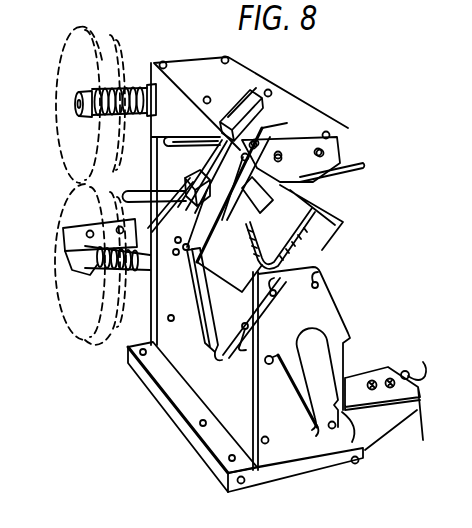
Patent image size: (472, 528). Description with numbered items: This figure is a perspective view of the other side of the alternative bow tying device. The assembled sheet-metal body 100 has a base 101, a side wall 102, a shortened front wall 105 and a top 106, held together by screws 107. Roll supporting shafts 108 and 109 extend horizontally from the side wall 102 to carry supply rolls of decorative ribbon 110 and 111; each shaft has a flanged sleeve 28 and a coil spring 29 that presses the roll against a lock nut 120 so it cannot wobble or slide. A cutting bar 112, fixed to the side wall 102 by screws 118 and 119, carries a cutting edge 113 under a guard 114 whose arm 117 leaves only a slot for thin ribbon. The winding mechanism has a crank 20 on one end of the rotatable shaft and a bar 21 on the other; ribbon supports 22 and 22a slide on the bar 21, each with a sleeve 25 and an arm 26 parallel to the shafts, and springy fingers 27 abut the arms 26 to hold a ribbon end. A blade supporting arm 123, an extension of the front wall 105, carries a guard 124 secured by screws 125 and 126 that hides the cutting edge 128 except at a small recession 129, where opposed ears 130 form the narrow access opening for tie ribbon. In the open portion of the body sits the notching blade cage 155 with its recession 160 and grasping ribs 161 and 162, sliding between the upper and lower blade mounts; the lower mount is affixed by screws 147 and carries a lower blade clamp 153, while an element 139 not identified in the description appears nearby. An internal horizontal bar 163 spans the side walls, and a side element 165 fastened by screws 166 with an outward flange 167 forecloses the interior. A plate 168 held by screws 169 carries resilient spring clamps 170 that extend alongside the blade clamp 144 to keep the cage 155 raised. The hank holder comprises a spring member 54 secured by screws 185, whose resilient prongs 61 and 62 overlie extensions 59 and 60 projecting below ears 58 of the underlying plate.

The crank 20 is at (366, 165).
The bar 21 is at (212, 162).
The ribbon support 22 is at (220, 124).
The ribbon support 22a is at (186, 182).
The sleeve 25 is at (258, 138).
The arm 26 is at (167, 141).
The finger 27 is at (152, 172).
The flanged sleeve 28 is at (80, 93).
The coil spring 29 is at (104, 90).
The spring member 54 is at (312, 319).
The ears 58 is at (270, 365).
The extension 59 is at (316, 432).
The extension 60 is at (340, 433).
The resilient prong 61 is at (307, 402).
The resilient prong 62 is at (333, 387).
The assembled body 100 is at (191, 50).
The base 101 is at (176, 418).
The side wall 102 is at (200, 384).
The front wall 105 is at (300, 432).
The top 106 is at (285, 103).
The screws 107 is at (265, 93).
The roll supporting shaft 108 is at (147, 88).
The roll supporting shaft 109 is at (112, 259).
The supply roll of decorative ribbon 110 is at (75, 57).
The supply roll of decorative ribbon 111 is at (68, 326).
The cutting bar 112 is at (169, 210).
The cutting edge 113 is at (95, 250).
The guard 114 is at (70, 236).
The arm 117 is at (96, 270).
The screw 118 is at (176, 256).
The screw 119 is at (186, 249).
The lock nut 120 is at (78, 112).
The blade supporting arm 123 is at (391, 430).
The guard 124 is at (356, 383).
The screw 125 is at (372, 390).
The screw 126 is at (390, 388).
The cutting edge 128 is at (405, 371).
The recession 129 is at (423, 363).
The ears 130 is at (417, 343).
The plate 139 is at (232, 190).
The blade clamp 144 is at (246, 242).
The screws 147 is at (242, 352).
The lower blade clamp 153 is at (252, 318).
The notching blade cage 155 is at (318, 214).
The recession 160 is at (315, 244).
The upper rib 161 is at (270, 240).
The lower rib 162 is at (252, 262).
The internal horizontal bar 163 is at (152, 338).
The side element 165 is at (208, 322).
The screws 166 is at (214, 358).
The flange 167 is at (192, 300).
The plate 168 is at (340, 145).
The screws 169 is at (282, 161).
The resilient spring clamps 170 is at (260, 200).
The screws 185 is at (293, 283).